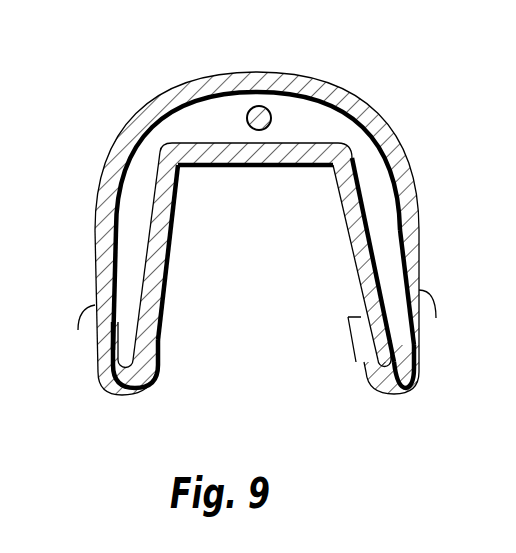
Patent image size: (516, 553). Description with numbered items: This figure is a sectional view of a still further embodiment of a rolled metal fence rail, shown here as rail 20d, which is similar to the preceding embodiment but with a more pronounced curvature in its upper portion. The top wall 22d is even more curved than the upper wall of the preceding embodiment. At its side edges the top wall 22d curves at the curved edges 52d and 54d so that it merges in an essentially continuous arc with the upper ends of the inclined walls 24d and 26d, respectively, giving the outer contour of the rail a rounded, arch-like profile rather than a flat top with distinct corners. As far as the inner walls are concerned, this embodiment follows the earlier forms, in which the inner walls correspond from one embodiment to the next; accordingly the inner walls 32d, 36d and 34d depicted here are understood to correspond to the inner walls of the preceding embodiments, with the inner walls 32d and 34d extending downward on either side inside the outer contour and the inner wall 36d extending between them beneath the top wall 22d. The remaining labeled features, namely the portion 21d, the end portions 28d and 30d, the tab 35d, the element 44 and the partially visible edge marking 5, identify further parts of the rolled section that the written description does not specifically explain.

The outer shell / clip body 20d is at (367, 99).
The inner wall surface of shell 21d is at (216, 118).
The top wall 22d is at (278, 71).
The inclined wall 24d is at (78, 330).
The inclined wall 26d is at (436, 318).
The left end loop of shell 28d is at (127, 389).
The right end loop of shell 30d is at (383, 382).
The left leg of channel member 32d is at (165, 288).
The right leg of channel member 34d is at (339, 260).
The tab on right leg 35d is at (350, 343).
The web of channel member 36d is at (240, 165).
The pin / hole 44 is at (250, 110).
The curved edge 52d is at (100, 182).
The curved edge 54d is at (407, 188).
The cut-off reference numeral 5 is at (511, 128).